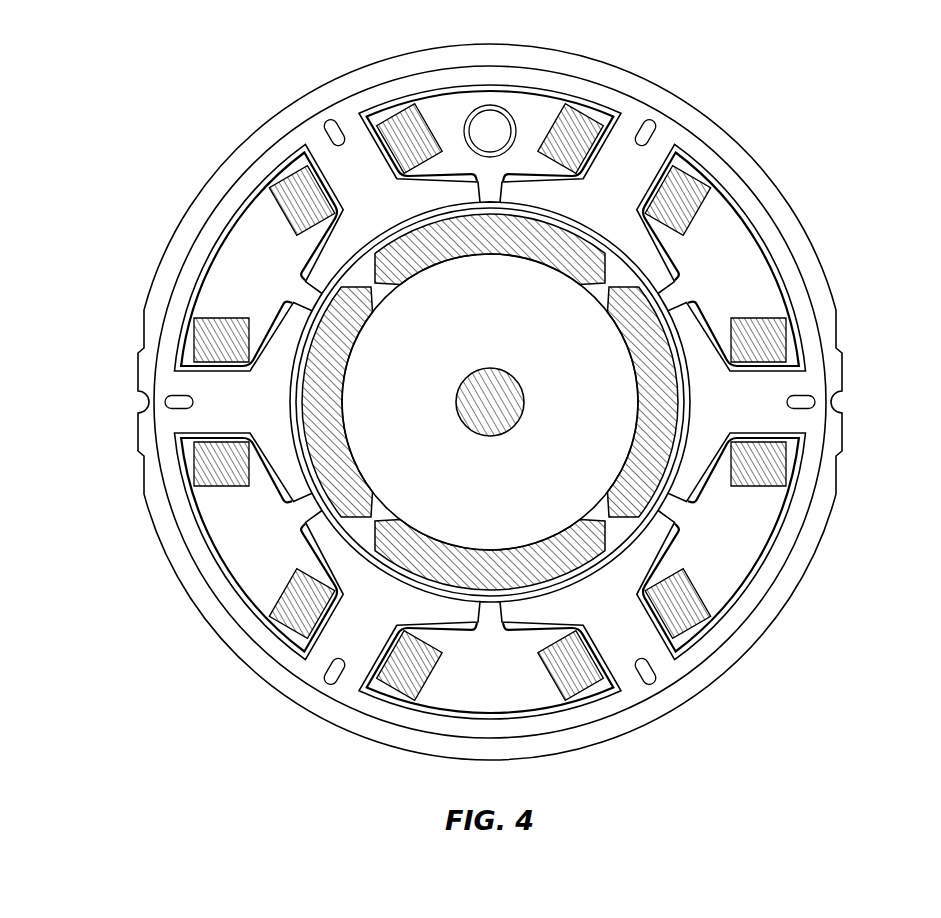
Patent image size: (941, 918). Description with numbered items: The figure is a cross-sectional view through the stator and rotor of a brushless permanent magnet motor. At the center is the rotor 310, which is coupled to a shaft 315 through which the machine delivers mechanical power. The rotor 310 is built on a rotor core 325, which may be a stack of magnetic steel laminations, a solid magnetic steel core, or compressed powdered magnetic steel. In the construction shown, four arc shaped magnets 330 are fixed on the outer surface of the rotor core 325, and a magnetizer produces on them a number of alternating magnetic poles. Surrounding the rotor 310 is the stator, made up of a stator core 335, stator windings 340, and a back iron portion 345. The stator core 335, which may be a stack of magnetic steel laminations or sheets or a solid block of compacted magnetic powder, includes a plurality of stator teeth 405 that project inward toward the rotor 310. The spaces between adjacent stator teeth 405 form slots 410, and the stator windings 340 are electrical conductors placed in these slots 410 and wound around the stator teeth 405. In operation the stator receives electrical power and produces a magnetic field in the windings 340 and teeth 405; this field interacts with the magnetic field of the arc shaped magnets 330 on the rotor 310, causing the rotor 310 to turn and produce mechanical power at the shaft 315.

The rotor 310 is at (343, 360).
The shaft 315 is at (492, 416).
The rotor core 325 is at (423, 412).
The arc shaped magnets 330 is at (413, 560).
The stator core 335 is at (268, 133).
The stator windings 340 is at (560, 130).
The back iron portion 345 is at (606, 94).
The stator teeth 405 is at (632, 170).
The slots 410 is at (722, 573).